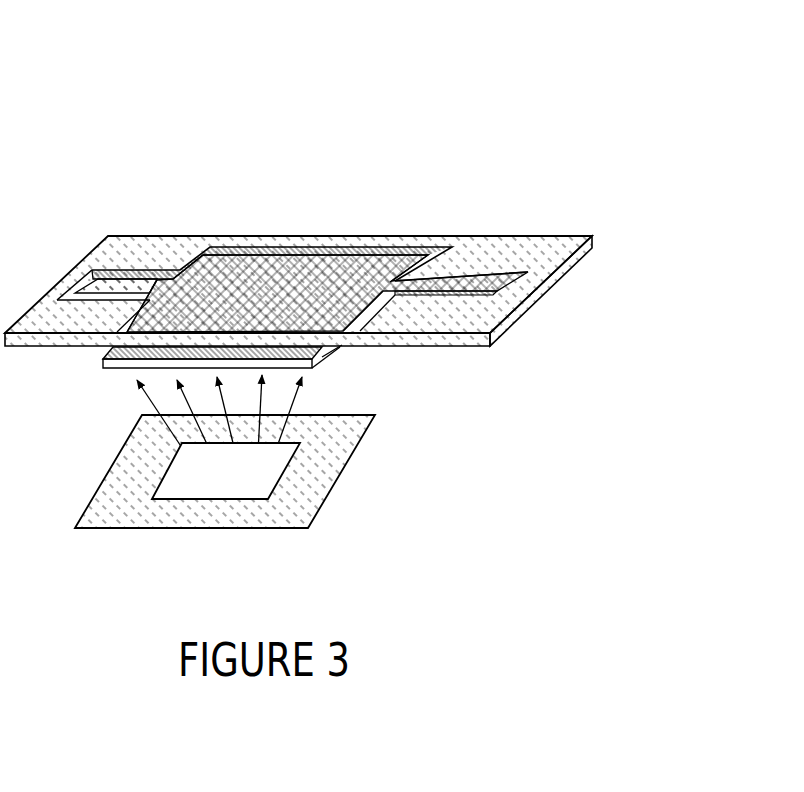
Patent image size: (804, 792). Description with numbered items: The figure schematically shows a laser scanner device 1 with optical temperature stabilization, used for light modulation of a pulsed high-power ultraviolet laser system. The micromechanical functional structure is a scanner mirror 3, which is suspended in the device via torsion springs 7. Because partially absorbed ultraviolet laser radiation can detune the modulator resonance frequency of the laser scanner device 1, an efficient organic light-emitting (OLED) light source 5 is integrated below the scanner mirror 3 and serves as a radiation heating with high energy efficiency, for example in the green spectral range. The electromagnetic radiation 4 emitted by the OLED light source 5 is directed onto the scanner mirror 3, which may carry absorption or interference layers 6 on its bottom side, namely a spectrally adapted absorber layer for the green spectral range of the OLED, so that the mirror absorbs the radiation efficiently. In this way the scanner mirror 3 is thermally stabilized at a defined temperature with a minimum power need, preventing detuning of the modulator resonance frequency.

The laser scanner device 1 is at (432, 120).
The scanner mirror 3 is at (254, 266).
The electromagnetic radiation 4 is at (187, 425).
The OLED light source 5 is at (293, 462).
The absorption or interference layers 6 is at (335, 352).
The torsion springs 7 is at (126, 288).